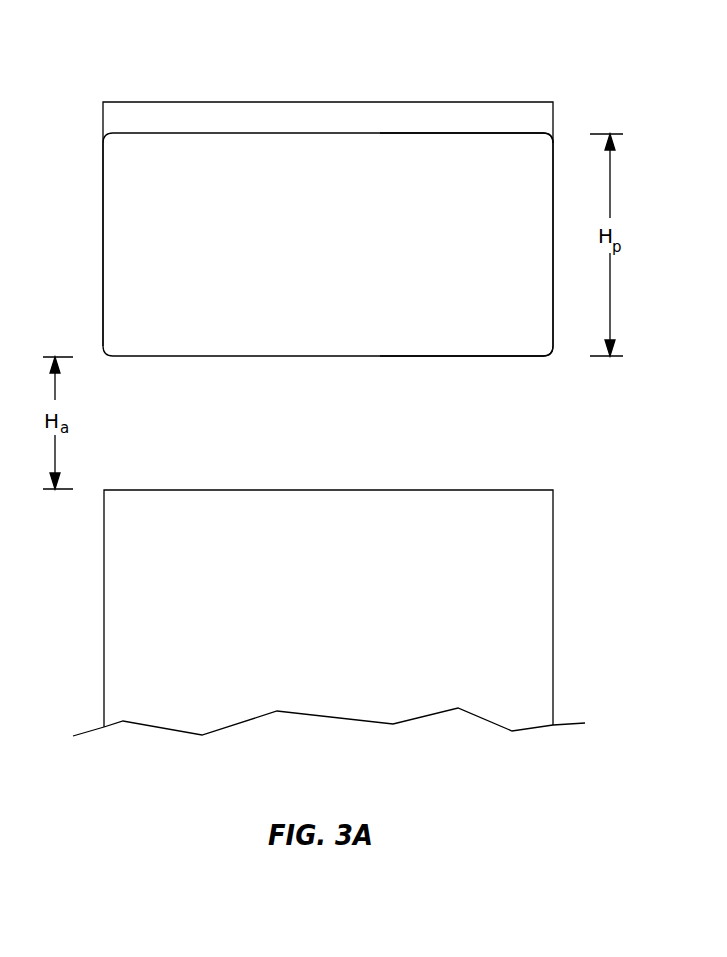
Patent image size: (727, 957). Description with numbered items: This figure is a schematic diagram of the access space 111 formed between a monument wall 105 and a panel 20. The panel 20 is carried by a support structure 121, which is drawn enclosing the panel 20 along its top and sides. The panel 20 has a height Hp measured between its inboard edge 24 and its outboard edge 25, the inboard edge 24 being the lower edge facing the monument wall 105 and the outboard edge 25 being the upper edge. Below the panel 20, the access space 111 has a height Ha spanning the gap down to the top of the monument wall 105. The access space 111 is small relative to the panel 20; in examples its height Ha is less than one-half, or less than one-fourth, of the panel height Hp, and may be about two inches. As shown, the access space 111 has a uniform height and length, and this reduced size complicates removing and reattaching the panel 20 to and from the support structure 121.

The support structure 121 is at (267, 115).
The panel 20 is at (350, 249).
The outboard edge 25 is at (402, 135).
The inboard edge 24 is at (395, 355).
The access space 111 is at (353, 428).
The monument wall 105 is at (355, 618).